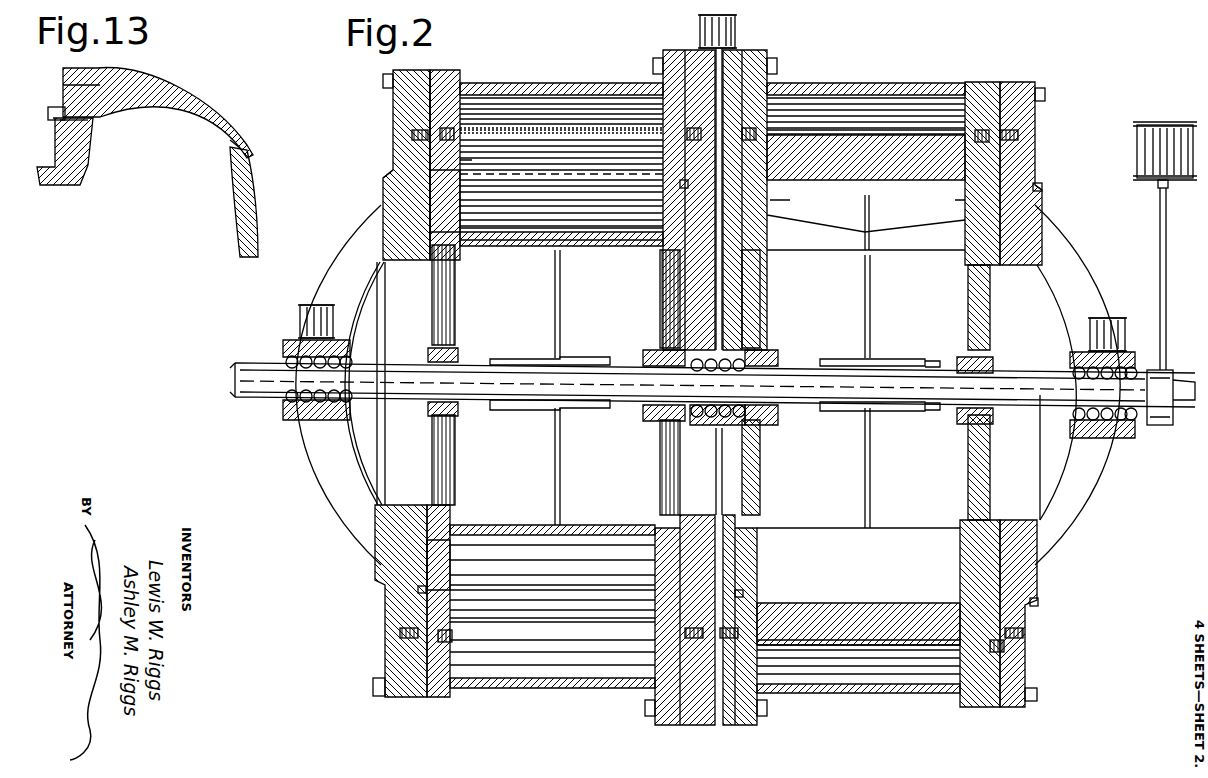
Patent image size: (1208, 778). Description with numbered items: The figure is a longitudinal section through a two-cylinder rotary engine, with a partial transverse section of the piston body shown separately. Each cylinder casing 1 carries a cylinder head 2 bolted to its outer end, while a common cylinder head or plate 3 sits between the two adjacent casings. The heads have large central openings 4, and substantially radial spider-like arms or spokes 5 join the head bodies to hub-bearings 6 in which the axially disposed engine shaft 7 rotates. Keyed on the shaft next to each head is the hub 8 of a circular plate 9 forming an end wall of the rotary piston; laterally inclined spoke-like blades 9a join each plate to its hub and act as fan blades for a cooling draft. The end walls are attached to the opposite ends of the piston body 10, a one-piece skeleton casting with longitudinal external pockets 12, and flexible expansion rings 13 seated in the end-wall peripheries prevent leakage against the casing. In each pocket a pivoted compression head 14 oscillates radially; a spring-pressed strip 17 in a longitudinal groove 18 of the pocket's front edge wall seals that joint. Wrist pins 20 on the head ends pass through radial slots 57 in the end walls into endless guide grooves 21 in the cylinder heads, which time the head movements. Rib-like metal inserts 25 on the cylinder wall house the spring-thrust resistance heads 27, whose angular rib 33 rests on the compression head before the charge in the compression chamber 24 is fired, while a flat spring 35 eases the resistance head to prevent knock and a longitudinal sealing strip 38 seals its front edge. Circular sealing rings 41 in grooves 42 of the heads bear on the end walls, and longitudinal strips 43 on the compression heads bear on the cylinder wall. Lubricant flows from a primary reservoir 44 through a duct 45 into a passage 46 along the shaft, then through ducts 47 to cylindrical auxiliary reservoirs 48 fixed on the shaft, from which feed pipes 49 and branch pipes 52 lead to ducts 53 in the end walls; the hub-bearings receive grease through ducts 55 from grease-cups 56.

In FIG. 2, the cylinder casing 1 is at (877, 95).
In FIG. 2, the cylinder head 2 is at (392, 191).
In FIG. 2, the cylinder head or plate 3 is at (703, 725).
In FIG. 2, the central opening 4 is at (385, 429).
In FIG. 2, the spider-like arms or spokes 5 is at (1096, 274).
In FIG. 2, the hub-bearing 6 is at (283, 413).
In FIG. 2, the engine shaft 7 is at (250, 379).
In FIG. 2, the hub 8 is at (458, 348).
In FIG. 2, the circular plate (piston end wall) 9 is at (430, 159).
In FIG. 2, the spoke-like blades 9a is at (760, 301).
In FIG. 13, the piston body 10 is at (185, 98).
In FIG. 2, the piston body 10 is at (606, 247).
In FIG. 13, the pocket 12 is at (240, 213).
In FIG. 2, the pocket 12 is at (547, 247).
In FIG. 2, the flexible expansion ring 13 is at (768, 137).
In FIG. 2, the compression head 14 is at (617, 140).
In FIG. 13, the spring-pressed strip 17 is at (52, 122).
In FIG. 13, the longitudinal groove 18 is at (90, 128).
In FIG. 2, the longitudinal groove 18 is at (561, 590).
In FIG. 2, the wrist pin 20 is at (663, 165).
In FIG. 2, the guide groove 21 is at (742, 194).
In FIG. 13, the compression chamber 24 is at (85, 70).
In FIG. 2, the rib-like metal insert 25 is at (577, 95).
In FIG. 2, the follower or resistance head 27 is at (514, 104).
In FIG. 2, the angular rib 33 is at (547, 140).
In FIG. 13, the flat spring 35 is at (250, 139).
In FIG. 2, the longitudinal sealing strip 38 is at (543, 645).
In FIG. 2, the circular sealing strip or ring 41 is at (412, 136).
In FIG. 2, the groove 42 is at (400, 634).
In FIG. 2, the longitudinal strip 43 is at (590, 359).
In FIG. 2, the primary reservoir 44 is at (1137, 151).
In FIG. 2, the duct 45 is at (1165, 380).
In FIG. 2, the passage 46 is at (936, 411).
In FIG. 2, the duct 47 is at (579, 410).
In FIG. 2, the auxiliary reservoir 48 is at (891, 412).
In FIG. 2, the feed pipe 49 is at (555, 321).
In FIG. 2, the branch pipe 52 is at (866, 218).
In FIG. 2, the duct 53 is at (768, 209).
In FIG. 2, the duct 55 is at (715, 303).
In FIG. 2, the grease-cup 56 is at (736, 31).
In FIG. 2, the radial slot 57 is at (430, 201).